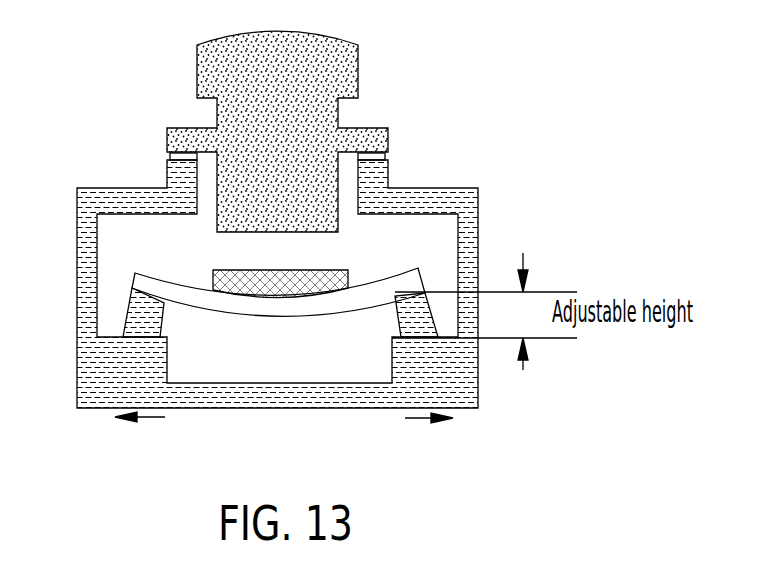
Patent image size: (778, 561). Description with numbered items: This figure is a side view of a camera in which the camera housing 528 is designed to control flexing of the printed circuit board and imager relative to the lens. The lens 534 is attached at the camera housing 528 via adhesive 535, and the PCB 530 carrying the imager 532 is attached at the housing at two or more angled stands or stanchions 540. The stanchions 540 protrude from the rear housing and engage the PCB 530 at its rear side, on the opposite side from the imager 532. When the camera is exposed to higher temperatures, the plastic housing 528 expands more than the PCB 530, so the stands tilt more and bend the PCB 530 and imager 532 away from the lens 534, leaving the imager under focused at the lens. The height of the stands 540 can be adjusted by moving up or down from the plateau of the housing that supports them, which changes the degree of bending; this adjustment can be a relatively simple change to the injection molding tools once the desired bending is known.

The camera housing 528 is at (503, 169).
The printed circuit board 530 is at (133, 286).
The imager 532 is at (298, 280).
The lens 534 is at (388, 72).
The adhesive 535 is at (170, 157).
The angled stands or stanchions 540 is at (137, 323).